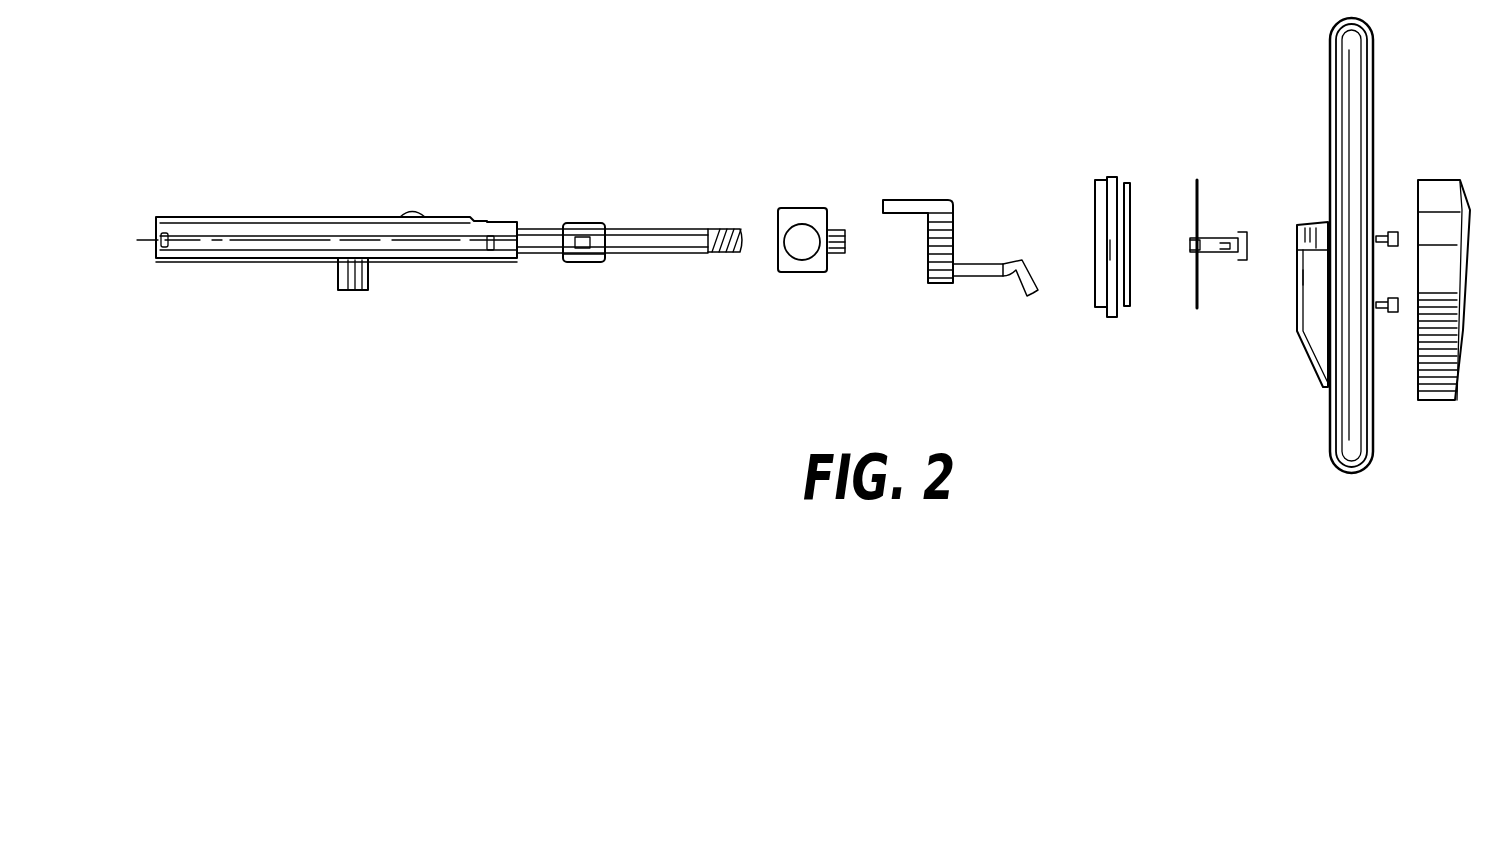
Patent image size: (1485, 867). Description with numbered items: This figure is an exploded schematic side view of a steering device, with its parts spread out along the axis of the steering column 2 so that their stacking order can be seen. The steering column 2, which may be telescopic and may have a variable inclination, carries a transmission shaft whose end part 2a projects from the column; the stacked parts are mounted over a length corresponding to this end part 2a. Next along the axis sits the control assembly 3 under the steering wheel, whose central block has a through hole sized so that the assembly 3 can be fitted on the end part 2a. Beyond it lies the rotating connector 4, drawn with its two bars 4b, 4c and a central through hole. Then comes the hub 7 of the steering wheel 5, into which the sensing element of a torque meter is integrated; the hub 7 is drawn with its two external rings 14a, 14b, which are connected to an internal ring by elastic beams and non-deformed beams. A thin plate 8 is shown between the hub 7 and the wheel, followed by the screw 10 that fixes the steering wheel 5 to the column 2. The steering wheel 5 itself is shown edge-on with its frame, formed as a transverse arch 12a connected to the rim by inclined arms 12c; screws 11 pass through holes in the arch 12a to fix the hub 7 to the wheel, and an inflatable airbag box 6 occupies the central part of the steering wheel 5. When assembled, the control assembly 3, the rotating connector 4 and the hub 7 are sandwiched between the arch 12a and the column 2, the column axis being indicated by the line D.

The steering column 2 is at (326, 270).
The end part of the transmission shaft 2a is at (660, 255).
The control assembly 3 is at (803, 282).
The rotating connector 4 is at (942, 198).
The bar 4b is at (903, 214).
The bar 4c is at (970, 262).
The steering wheel 5 is at (1376, 132).
The inflatable airbag box 6 is at (1437, 400).
The hub 7 is at (1098, 310).
The spring plate 8 is at (1195, 288).
The screw 10 is at (1228, 232).
The screws 11 is at (1393, 230).
The transverse arch 12a is at (1296, 301).
The inclined arms 12c is at (1318, 225).
The external ring 14a is at (1097, 205).
The external ring 14b is at (1133, 207).
The axis direction D is at (343, 240).